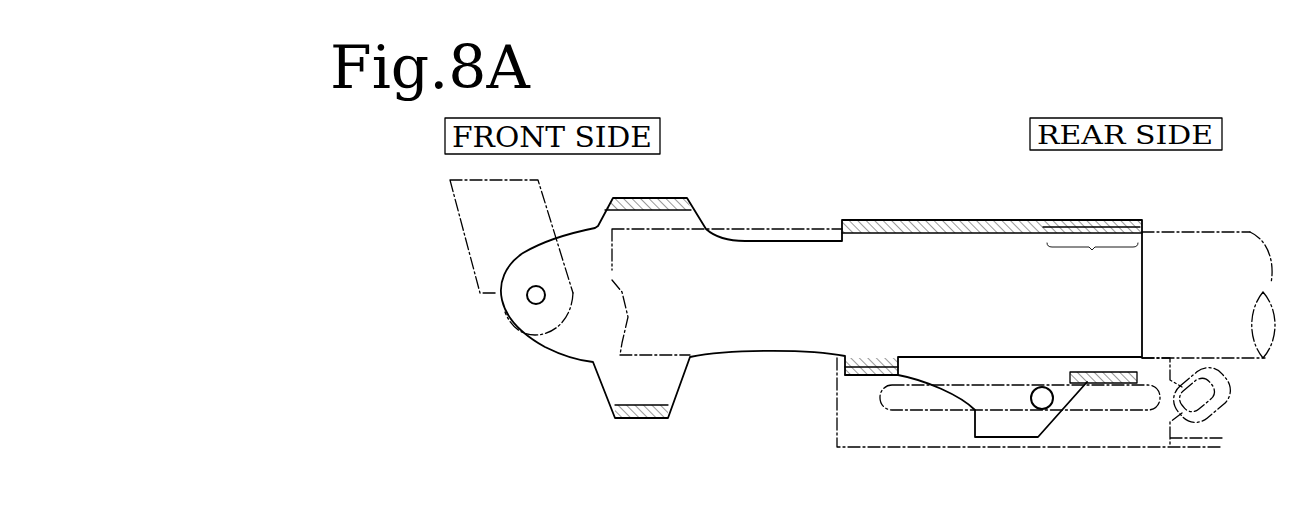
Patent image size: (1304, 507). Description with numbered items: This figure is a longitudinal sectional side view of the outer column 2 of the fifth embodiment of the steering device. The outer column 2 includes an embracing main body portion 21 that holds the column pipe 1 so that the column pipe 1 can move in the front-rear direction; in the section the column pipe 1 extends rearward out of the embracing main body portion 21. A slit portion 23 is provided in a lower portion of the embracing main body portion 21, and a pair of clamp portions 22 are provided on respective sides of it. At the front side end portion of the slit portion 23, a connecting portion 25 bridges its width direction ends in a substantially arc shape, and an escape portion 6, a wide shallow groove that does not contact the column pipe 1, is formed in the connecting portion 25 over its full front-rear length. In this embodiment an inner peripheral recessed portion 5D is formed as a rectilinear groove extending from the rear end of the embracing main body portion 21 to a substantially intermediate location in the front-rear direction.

The column pipe 1 is at (1237, 226).
The outer column 2 is at (992, 175).
The embracing main body portion 21 is at (925, 218).
The clamp portion 22 is at (1040, 430).
The slit portion 23 is at (977, 368).
The connecting portion 25 is at (888, 376).
The inner peripheral recessed portion 5D is at (1092, 252).
The escape portion 6 is at (858, 360).